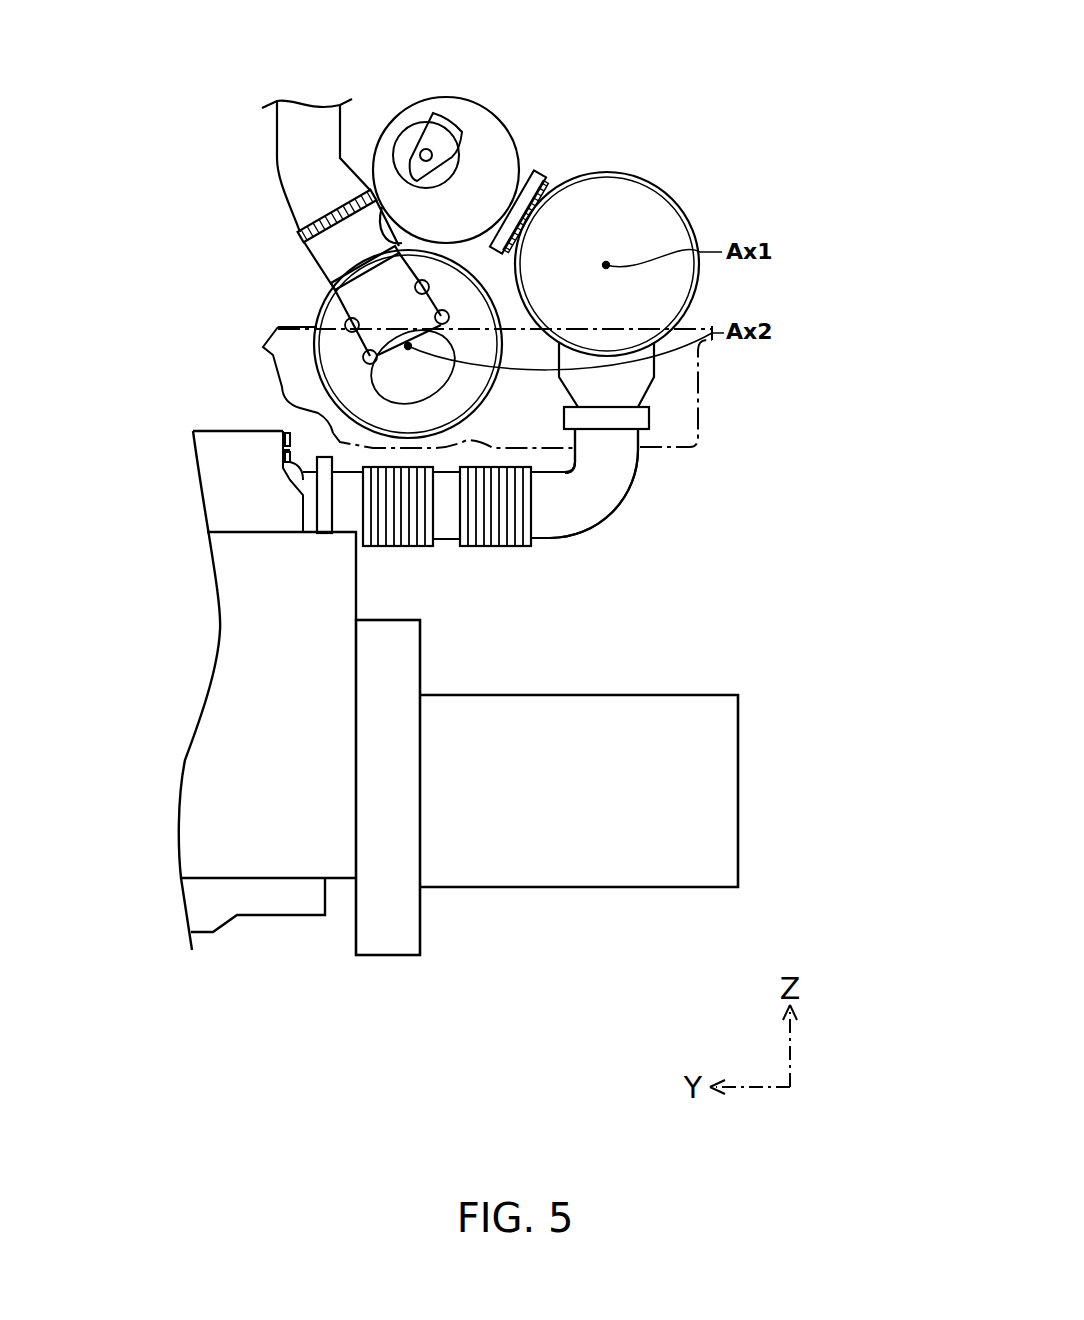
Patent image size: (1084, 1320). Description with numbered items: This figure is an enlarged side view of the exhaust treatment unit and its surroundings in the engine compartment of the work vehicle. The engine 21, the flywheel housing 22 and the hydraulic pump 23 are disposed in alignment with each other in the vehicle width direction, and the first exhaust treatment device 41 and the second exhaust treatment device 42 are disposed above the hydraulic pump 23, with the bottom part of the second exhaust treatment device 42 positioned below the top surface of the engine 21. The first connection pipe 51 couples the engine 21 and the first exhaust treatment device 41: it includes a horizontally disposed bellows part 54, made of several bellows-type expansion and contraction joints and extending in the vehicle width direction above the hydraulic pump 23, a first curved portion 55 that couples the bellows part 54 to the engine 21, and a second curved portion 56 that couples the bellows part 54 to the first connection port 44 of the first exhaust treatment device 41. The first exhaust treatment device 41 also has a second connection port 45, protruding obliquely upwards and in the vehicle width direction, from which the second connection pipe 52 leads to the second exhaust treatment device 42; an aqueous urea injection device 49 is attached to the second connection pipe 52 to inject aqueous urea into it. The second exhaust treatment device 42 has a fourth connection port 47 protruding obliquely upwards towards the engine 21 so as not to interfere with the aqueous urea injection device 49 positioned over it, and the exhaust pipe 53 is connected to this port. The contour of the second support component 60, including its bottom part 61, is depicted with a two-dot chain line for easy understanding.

The engine 21 is at (270, 858).
The flywheel housing 22 is at (389, 935).
The hydraulic pump 23 is at (696, 873).
The first exhaust treatment device 41 is at (592, 202).
The second exhaust treatment device 42 is at (333, 347).
The first connection port 44 is at (640, 383).
The second connection port 45 is at (542, 187).
The fourth connection port 47 is at (337, 257).
The aqueous urea injection device 49 is at (436, 128).
The first connection pipe 51 is at (486, 528).
The second connection pipe 52 is at (446, 121).
The exhaust pipe 53 is at (288, 132).
The bellows part 54 is at (477, 528).
The first curved portion 55 is at (282, 452).
The second curved portion 56 is at (612, 508).
The second support component 60 is at (710, 418).
The bottom part 61 is at (672, 450).